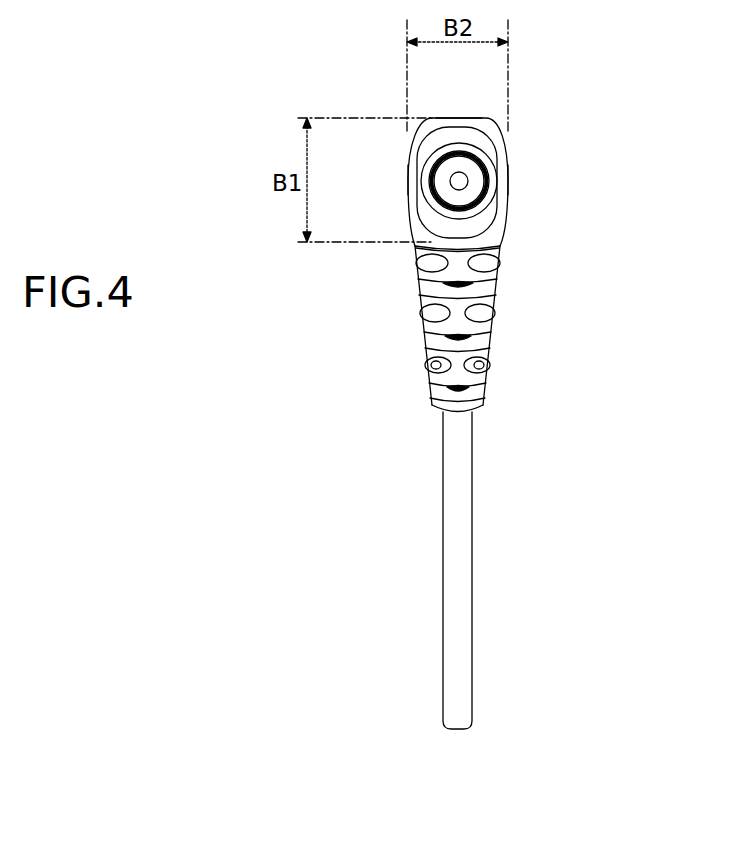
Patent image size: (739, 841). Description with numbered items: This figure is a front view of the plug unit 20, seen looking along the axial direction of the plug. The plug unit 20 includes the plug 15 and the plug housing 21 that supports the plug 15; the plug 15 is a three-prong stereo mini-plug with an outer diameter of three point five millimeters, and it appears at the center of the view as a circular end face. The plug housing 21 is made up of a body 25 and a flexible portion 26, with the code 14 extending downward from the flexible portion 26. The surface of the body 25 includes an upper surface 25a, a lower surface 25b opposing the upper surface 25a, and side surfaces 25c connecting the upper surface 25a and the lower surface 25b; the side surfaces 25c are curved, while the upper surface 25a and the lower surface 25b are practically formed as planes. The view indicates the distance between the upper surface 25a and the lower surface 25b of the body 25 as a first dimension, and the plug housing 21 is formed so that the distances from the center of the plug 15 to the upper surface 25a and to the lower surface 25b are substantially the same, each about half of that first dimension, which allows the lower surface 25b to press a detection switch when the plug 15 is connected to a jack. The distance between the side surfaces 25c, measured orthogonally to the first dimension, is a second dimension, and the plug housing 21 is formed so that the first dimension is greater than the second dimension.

The code 14 is at (462, 543).
The plug 15 is at (470, 190).
The plug unit 20 is at (590, 131).
The plug housing 21 is at (407, 262).
The body 25 is at (506, 224).
The upper surface 25a is at (458, 118).
The lower surface 25b is at (458, 244).
The side surfaces 25c is at (409, 183).
The flexible portion 26 is at (490, 320).